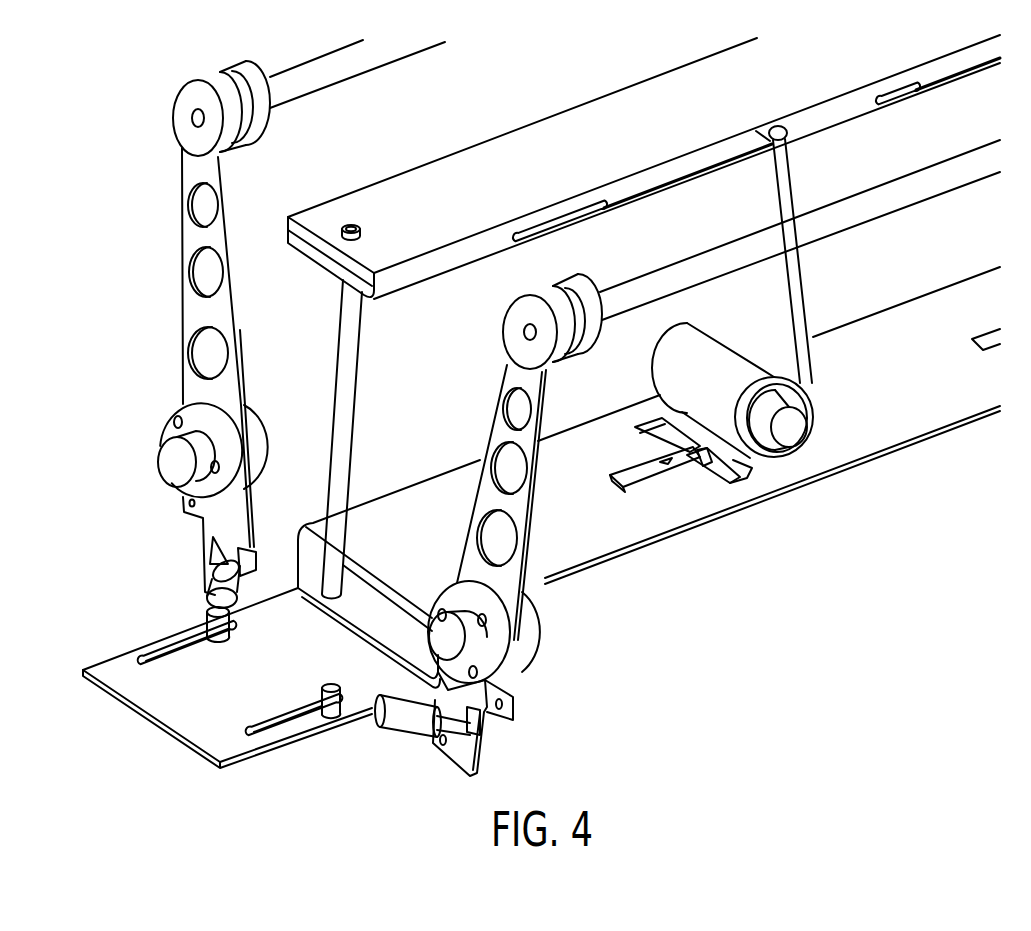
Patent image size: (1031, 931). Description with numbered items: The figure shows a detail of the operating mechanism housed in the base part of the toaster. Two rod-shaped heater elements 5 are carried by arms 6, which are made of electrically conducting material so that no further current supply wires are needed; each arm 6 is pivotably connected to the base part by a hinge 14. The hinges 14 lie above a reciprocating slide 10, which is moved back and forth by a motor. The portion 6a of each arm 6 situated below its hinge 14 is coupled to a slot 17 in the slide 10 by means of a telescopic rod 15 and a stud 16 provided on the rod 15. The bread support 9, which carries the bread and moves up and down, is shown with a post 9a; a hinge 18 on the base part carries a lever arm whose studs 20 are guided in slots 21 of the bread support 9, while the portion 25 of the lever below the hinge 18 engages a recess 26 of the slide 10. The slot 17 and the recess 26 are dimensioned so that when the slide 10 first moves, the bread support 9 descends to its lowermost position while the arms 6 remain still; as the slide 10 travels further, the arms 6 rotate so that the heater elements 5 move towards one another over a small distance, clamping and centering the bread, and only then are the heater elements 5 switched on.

The rod-shaped heater element 5 is at (310, 80).
The arm 6 is at (192, 302).
The portion of arm situated below the hinge 6a is at (212, 527).
The bread support 9 is at (418, 190).
The post 9a is at (342, 415).
The slide 10 is at (165, 702).
The hinge 14 is at (256, 467).
The telescopic rod 15 is at (223, 583).
The stud 16 is at (333, 685).
The slot 17 is at (270, 727).
The hinge 18 is at (797, 430).
The stud 20 is at (778, 127).
The slot 21 is at (597, 205).
The portion of lever situated below the hinge 25 is at (688, 457).
The recess 26 is at (623, 473).